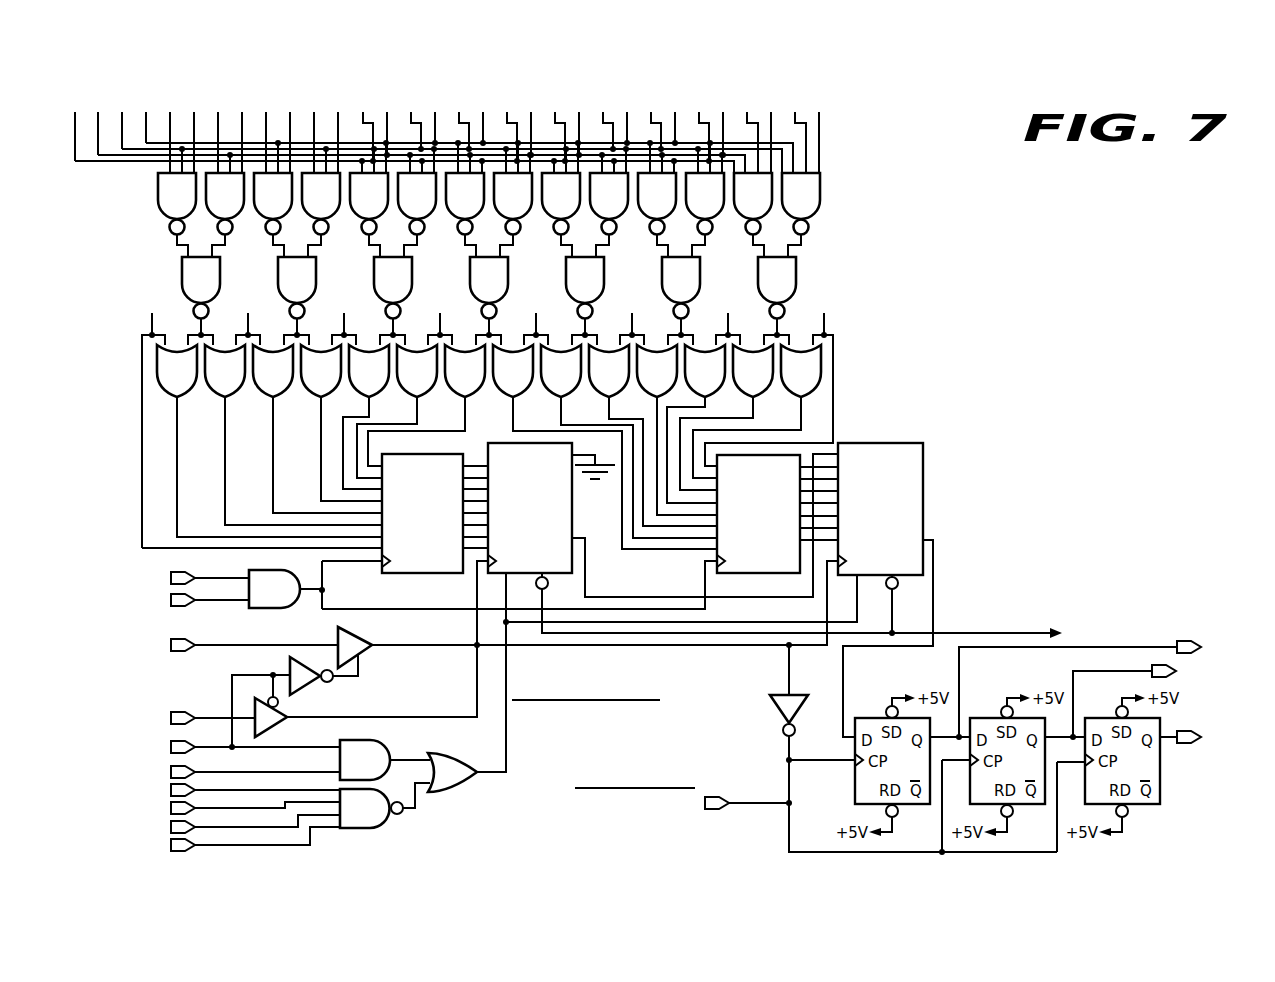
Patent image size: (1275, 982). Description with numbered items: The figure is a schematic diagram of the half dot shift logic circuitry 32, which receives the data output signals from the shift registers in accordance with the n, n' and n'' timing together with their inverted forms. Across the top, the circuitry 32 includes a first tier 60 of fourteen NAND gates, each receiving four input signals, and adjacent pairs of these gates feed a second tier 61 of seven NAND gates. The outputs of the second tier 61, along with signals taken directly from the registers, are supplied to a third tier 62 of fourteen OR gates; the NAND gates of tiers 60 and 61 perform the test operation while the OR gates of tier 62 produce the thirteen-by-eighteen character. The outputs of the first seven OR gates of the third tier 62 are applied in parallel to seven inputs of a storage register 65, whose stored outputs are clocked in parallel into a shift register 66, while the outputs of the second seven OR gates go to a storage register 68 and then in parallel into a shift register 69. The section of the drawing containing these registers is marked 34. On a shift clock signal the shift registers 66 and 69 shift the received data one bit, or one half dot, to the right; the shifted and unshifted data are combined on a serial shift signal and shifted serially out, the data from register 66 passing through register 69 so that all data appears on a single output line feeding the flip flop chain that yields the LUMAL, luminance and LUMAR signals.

The half dot shift logic circuitry 32 is at (1082, 212).
The latch and reset register section 34 is at (652, 584).
The first tier of fourteen NAND gates 60 is at (861, 188).
The second tier of seven NAND gates 61 is at (852, 273).
The third tier of fourteen OR gates 62 is at (874, 361).
The storage register 65 is at (434, 488).
The shift register 66 is at (541, 493).
The storage register 68 is at (770, 493).
The shift register 69 is at (891, 493).